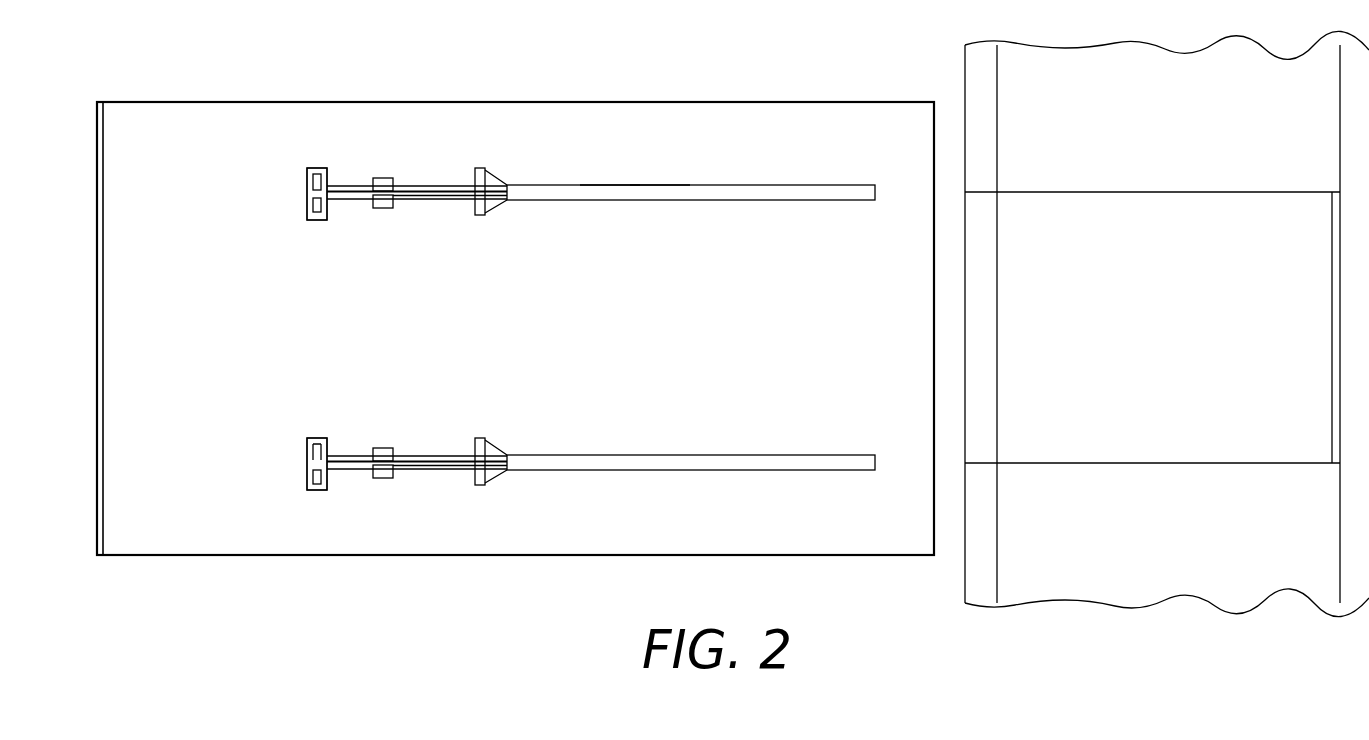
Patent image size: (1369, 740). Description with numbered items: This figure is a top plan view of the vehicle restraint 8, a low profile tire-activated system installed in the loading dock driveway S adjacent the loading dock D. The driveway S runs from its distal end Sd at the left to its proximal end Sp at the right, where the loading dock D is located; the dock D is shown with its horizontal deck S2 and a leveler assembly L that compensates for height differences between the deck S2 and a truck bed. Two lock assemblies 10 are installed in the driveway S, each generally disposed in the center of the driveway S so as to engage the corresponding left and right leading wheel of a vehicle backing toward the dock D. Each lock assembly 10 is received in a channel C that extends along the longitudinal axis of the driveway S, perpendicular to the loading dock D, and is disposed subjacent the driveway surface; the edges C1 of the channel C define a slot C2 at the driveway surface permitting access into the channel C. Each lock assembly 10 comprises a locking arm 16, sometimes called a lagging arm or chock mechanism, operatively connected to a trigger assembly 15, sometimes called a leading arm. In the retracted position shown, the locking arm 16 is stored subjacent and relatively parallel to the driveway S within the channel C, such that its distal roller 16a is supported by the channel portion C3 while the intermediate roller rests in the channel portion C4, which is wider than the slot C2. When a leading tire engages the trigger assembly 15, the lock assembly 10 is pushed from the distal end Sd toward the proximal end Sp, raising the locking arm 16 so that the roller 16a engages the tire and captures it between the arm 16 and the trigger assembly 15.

The vehicle restraint 8 is at (639, 215).
The lock assembly 10 is at (465, 205).
The trigger assembly 15 is at (485, 170).
The locking arm 16 is at (356, 200).
The roller 16a is at (309, 206).
The channel C is at (700, 186).
The edges of the channel C1 is at (648, 186).
The slot C2 is at (607, 186).
The channel portion C3 is at (255, 340).
The channel portion C4 is at (335, 340).
The driveway S is at (190, 366).
The distal end of the driveway Sd is at (70, 387).
The proximal end of the driveway Sp is at (896, 380).
The deck S2 is at (1163, 142).
The leveler assembly L is at (1192, 414).
The loading dock D is at (1192, 528).